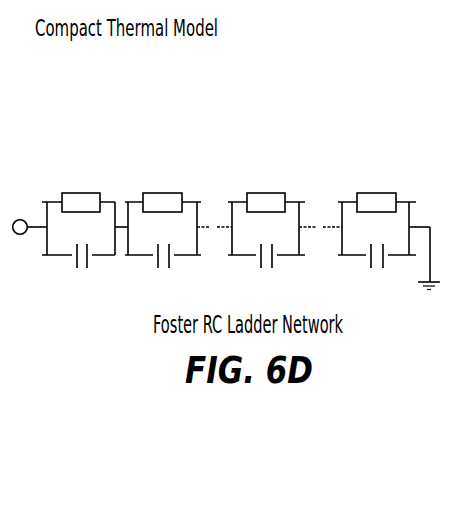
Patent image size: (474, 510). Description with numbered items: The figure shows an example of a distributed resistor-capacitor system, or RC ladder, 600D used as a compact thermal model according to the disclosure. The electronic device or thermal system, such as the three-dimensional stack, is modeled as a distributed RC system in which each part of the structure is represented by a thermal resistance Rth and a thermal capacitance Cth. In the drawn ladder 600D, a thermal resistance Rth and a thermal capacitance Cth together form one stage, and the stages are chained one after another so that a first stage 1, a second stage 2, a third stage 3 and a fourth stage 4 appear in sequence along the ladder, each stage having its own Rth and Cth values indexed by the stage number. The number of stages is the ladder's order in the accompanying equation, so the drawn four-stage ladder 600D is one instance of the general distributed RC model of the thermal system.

The distributed resistor-capacitor (RC) system 600D is at (256, 122).
The first RC stage (Rth1 / Cth1) 1 is at (78, 229).
The second RC stage (Rth2 / Cth2) 2 is at (163, 229).
The third RC stage (Rth3 / Cth3) 3 is at (266, 229).
The fourth RC stage (Rth4 / Cth4) 4 is at (377, 229).